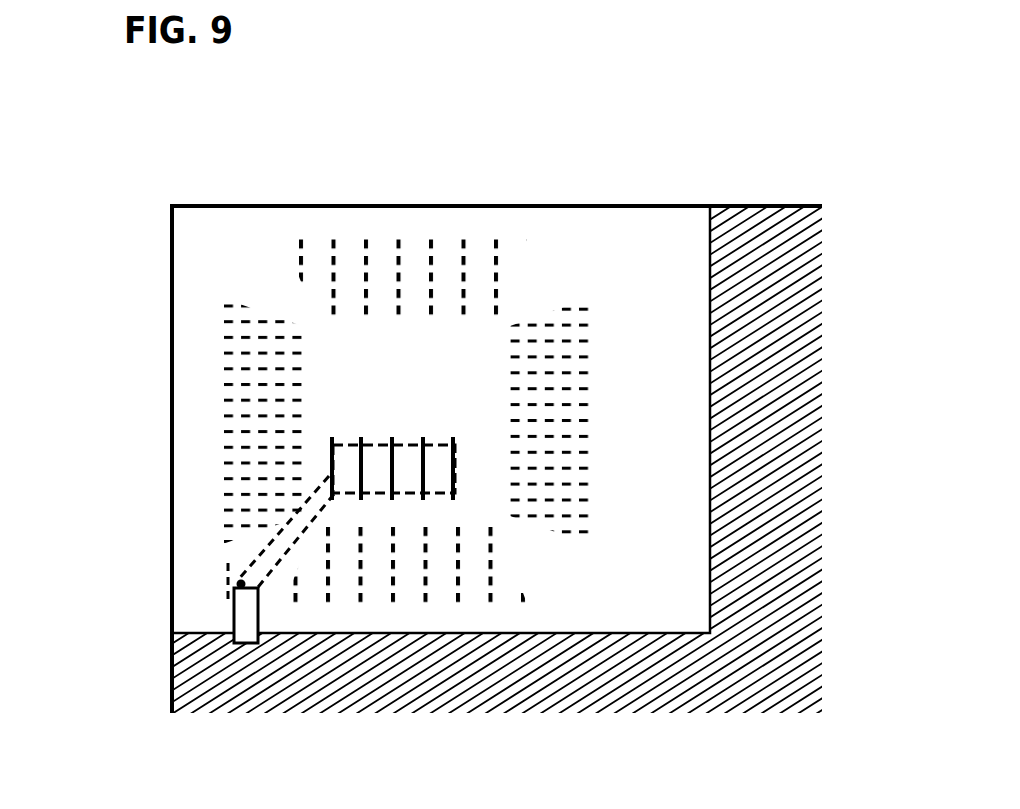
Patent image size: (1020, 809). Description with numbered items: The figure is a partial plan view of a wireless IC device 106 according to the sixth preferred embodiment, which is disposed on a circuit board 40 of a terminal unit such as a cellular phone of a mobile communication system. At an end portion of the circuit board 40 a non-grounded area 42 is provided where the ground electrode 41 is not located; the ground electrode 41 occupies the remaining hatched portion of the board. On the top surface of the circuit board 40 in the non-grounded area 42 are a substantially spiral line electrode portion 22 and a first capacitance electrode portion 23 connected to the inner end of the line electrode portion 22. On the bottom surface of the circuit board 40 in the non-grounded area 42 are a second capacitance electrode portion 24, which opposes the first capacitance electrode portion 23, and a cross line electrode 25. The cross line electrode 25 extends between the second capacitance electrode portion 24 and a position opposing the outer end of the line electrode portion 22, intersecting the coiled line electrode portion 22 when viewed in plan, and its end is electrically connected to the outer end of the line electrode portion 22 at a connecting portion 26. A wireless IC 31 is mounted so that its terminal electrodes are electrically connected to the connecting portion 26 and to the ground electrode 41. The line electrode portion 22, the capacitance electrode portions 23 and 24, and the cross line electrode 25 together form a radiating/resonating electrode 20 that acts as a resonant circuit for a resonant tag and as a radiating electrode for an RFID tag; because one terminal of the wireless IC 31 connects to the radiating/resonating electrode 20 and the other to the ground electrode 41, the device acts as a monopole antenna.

The wireless IC device 106 is at (559, 136).
The circuit board 40 is at (172, 205).
The ground electrode 41 is at (805, 290).
The non-grounded area 42 is at (268, 222).
The radiating/resonating electrode 20 is at (97, 288).
The line electrode portion 22 is at (228, 330).
The first capacitance electrode portion 23 is at (388, 437).
The second capacitance electrode portion 24 is at (333, 445).
The cross line electrode 25 is at (292, 508).
The connecting portion 26 is at (236, 580).
The wireless IC 31 is at (233, 625).